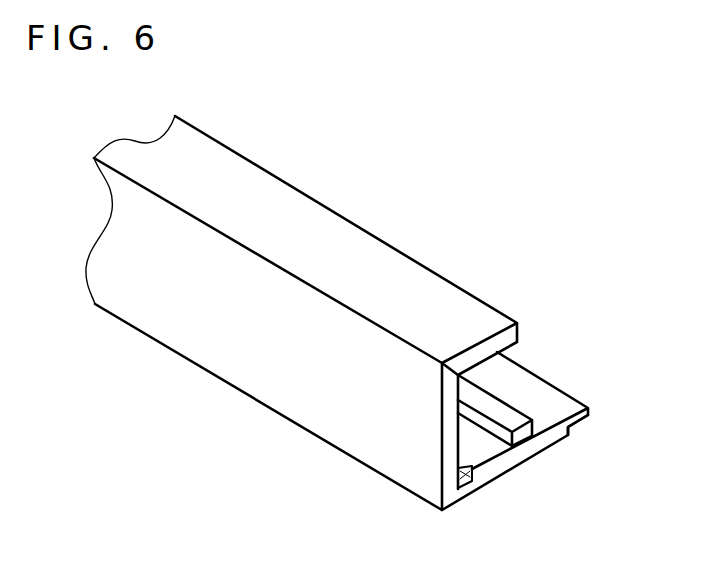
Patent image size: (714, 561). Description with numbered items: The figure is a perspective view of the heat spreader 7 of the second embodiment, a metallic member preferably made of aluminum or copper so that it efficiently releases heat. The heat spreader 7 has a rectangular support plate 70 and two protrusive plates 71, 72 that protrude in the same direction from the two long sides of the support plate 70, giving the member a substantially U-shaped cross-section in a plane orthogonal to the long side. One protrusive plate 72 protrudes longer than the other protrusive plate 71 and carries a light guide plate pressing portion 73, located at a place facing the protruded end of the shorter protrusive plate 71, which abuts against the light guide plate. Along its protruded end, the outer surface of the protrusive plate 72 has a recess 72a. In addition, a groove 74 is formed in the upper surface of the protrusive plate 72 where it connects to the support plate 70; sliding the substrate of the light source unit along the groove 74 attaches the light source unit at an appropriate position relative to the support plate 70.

The heat spreader 7 is at (265, 148).
The support plate 70 is at (323, 422).
The protrusive plate 71 is at (423, 280).
The protrusive plate 72 is at (565, 406).
The recess 72a is at (580, 420).
The light guide plate pressing portion 73 is at (502, 413).
The groove 74 is at (477, 483).